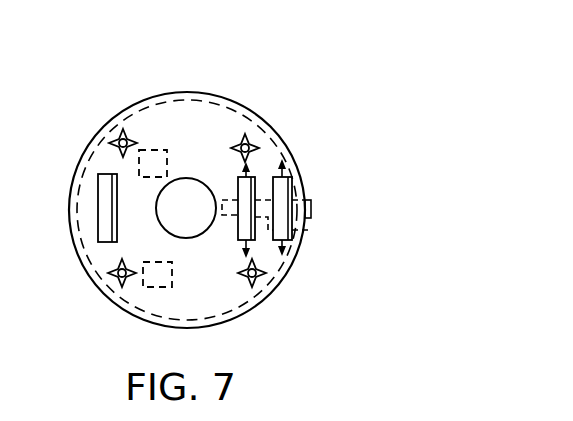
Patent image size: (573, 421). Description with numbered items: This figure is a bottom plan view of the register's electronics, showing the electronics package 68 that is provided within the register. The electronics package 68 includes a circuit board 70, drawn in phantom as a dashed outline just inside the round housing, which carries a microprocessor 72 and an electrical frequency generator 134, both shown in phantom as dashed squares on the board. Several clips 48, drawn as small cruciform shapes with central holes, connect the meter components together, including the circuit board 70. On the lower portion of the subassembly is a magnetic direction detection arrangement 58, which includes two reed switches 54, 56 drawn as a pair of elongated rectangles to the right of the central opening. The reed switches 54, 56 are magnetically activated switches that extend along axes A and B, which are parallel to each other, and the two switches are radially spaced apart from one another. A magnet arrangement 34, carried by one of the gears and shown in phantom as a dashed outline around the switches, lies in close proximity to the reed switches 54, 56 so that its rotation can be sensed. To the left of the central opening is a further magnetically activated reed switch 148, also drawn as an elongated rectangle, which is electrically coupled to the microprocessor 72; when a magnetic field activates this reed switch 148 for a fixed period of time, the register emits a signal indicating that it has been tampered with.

The electronics package 68 is at (252, 96).
The circuit board 70 is at (256, 111).
The magnetic direction detection arrangement 58 is at (316, 163).
The reed switch 148 is at (97, 204).
The clips 48 is at (122, 134).
The microprocessor 72 is at (155, 146).
The electrical frequency generator 134 is at (157, 288).
The reed switch 54 is at (240, 229).
The reed switch 56 is at (292, 228).
The magnet arrangement 34 is at (304, 198).
The axis A is at (240, 176).
The axis B is at (295, 258).